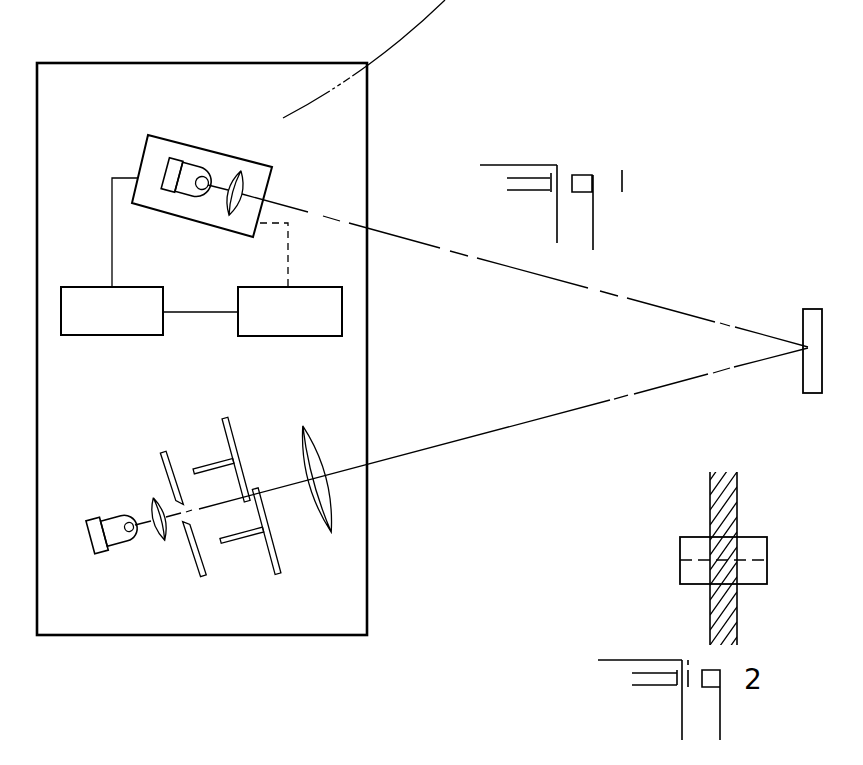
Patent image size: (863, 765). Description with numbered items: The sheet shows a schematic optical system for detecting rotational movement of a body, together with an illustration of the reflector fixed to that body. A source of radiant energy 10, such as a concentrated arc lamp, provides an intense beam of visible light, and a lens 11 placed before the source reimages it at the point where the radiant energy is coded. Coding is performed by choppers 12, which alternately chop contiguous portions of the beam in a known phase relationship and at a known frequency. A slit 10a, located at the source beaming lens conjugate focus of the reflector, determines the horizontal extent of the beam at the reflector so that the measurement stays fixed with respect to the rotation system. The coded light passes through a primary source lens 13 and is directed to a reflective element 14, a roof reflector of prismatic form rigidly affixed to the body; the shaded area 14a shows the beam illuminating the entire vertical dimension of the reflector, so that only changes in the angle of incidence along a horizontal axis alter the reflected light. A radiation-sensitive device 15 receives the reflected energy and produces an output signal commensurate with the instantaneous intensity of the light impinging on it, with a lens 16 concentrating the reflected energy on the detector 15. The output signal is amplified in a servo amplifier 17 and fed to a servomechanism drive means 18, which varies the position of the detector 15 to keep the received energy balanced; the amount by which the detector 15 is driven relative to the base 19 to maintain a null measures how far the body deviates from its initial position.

In FIG. 1, the source of radiant energy 10 is at (115, 517).
In FIG. 1, the slit 10a is at (167, 466).
In FIG. 1, the lens 11 is at (160, 540).
In FIG. 1, the choppers 12 is at (238, 441).
In FIG. 1, the primary source lens 13 is at (310, 430).
In FIG. 1, the reflective element 14 is at (822, 387).
In FIG. 2, the reflective element 14 is at (767, 567).
In FIG. 2, the shaded area 14a is at (737, 510).
In FIG. 1, the radiation-sensitive device 15 is at (191, 165).
In FIG. 1, the lens 16 is at (246, 176).
In FIG. 1, the servo amplifier 17 is at (103, 335).
In FIG. 1, the servomechanism drive means 18 is at (288, 336).
In FIG. 1, the base 19 is at (368, 295).